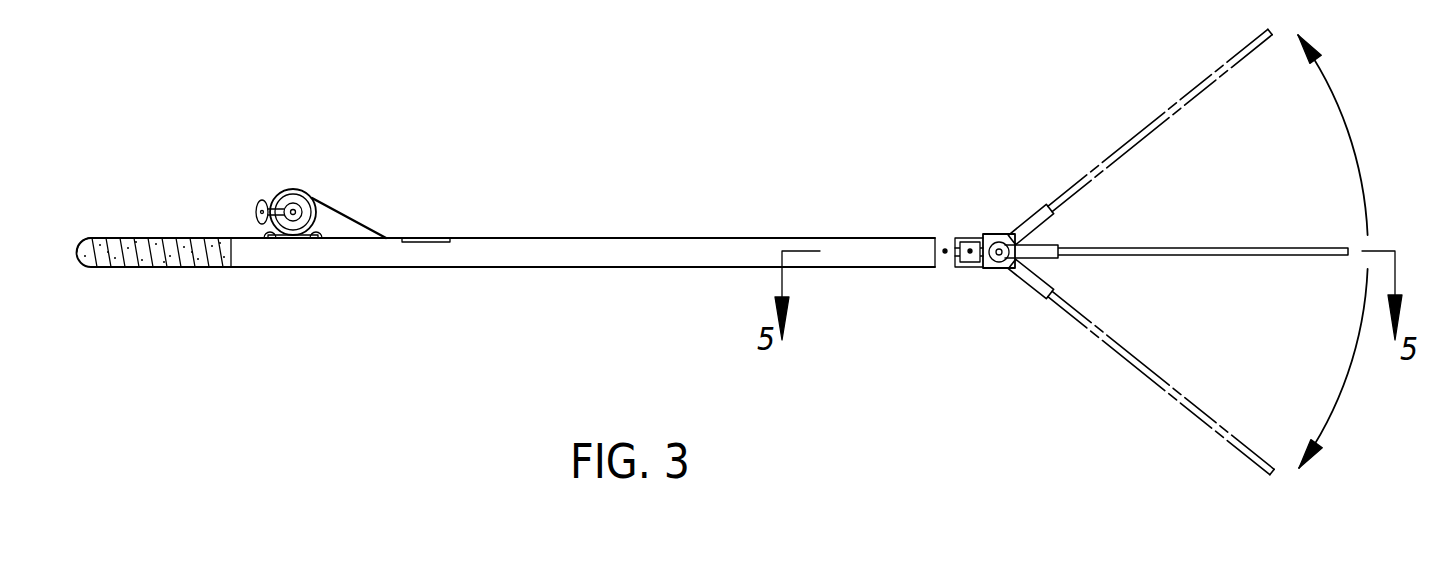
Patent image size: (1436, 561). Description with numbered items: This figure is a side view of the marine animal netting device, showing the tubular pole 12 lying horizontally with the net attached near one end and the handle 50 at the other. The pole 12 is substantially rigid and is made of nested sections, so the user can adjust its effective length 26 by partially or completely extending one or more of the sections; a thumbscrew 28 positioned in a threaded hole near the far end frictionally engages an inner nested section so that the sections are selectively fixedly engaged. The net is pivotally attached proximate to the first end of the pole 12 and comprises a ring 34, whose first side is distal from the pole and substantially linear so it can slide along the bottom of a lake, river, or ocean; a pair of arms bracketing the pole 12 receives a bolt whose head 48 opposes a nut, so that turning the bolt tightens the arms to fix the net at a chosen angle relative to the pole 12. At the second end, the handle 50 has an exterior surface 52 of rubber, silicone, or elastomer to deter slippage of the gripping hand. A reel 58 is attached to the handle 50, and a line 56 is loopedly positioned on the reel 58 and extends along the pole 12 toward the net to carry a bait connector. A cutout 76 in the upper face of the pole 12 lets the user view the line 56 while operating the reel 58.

The pole 12 is at (484, 267).
The effective length 26 is at (581, 238).
The thumbscrew 28 is at (945, 250).
The ring 34 is at (1240, 248).
The head 48 is at (1000, 242).
The handle 50 is at (157, 265).
The exterior surface 52 is at (173, 238).
The line 56 is at (348, 212).
The reel 58 is at (292, 190).
The cutout 76 is at (423, 240).